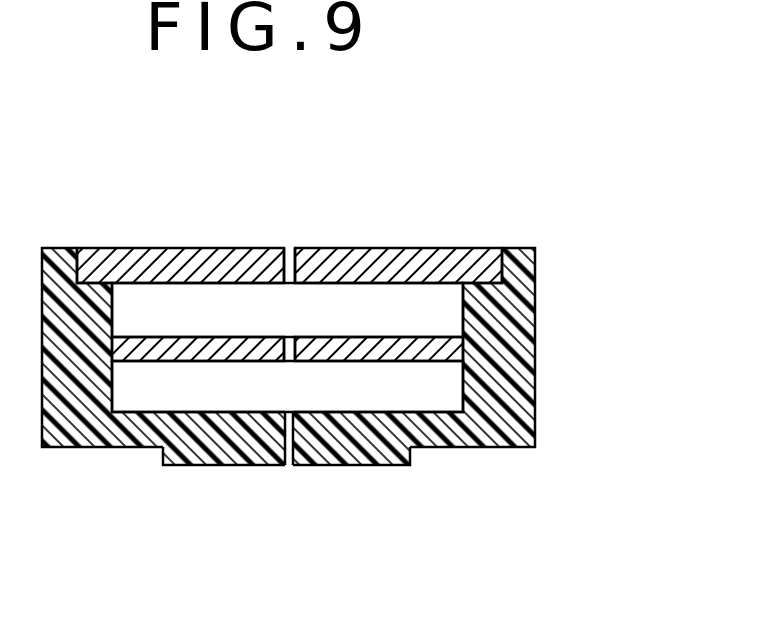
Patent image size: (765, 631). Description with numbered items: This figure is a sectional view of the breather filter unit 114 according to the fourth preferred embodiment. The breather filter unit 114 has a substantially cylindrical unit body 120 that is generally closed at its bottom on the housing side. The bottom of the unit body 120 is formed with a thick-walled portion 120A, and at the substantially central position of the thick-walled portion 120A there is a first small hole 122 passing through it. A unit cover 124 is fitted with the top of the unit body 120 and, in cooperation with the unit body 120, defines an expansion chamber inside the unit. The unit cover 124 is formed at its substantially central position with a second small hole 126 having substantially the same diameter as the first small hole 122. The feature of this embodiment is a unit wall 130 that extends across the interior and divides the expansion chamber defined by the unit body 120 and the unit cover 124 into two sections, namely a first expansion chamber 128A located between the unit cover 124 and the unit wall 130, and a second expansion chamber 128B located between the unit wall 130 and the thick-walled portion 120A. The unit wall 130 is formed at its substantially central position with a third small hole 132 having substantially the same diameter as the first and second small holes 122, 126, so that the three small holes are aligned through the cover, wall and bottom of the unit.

The breather filter unit 114 is at (473, 175).
The unit body 120 is at (535, 385).
The thick-walled portion 120A is at (367, 465).
The first small hole 122 is at (290, 457).
The unit cover 124 is at (373, 248).
The second small hole 126 is at (287, 250).
The first expansion chamber 128A is at (145, 295).
The second expansion chamber 128B is at (145, 402).
The unit wall 130 is at (367, 337).
The third small hole 132 is at (290, 361).